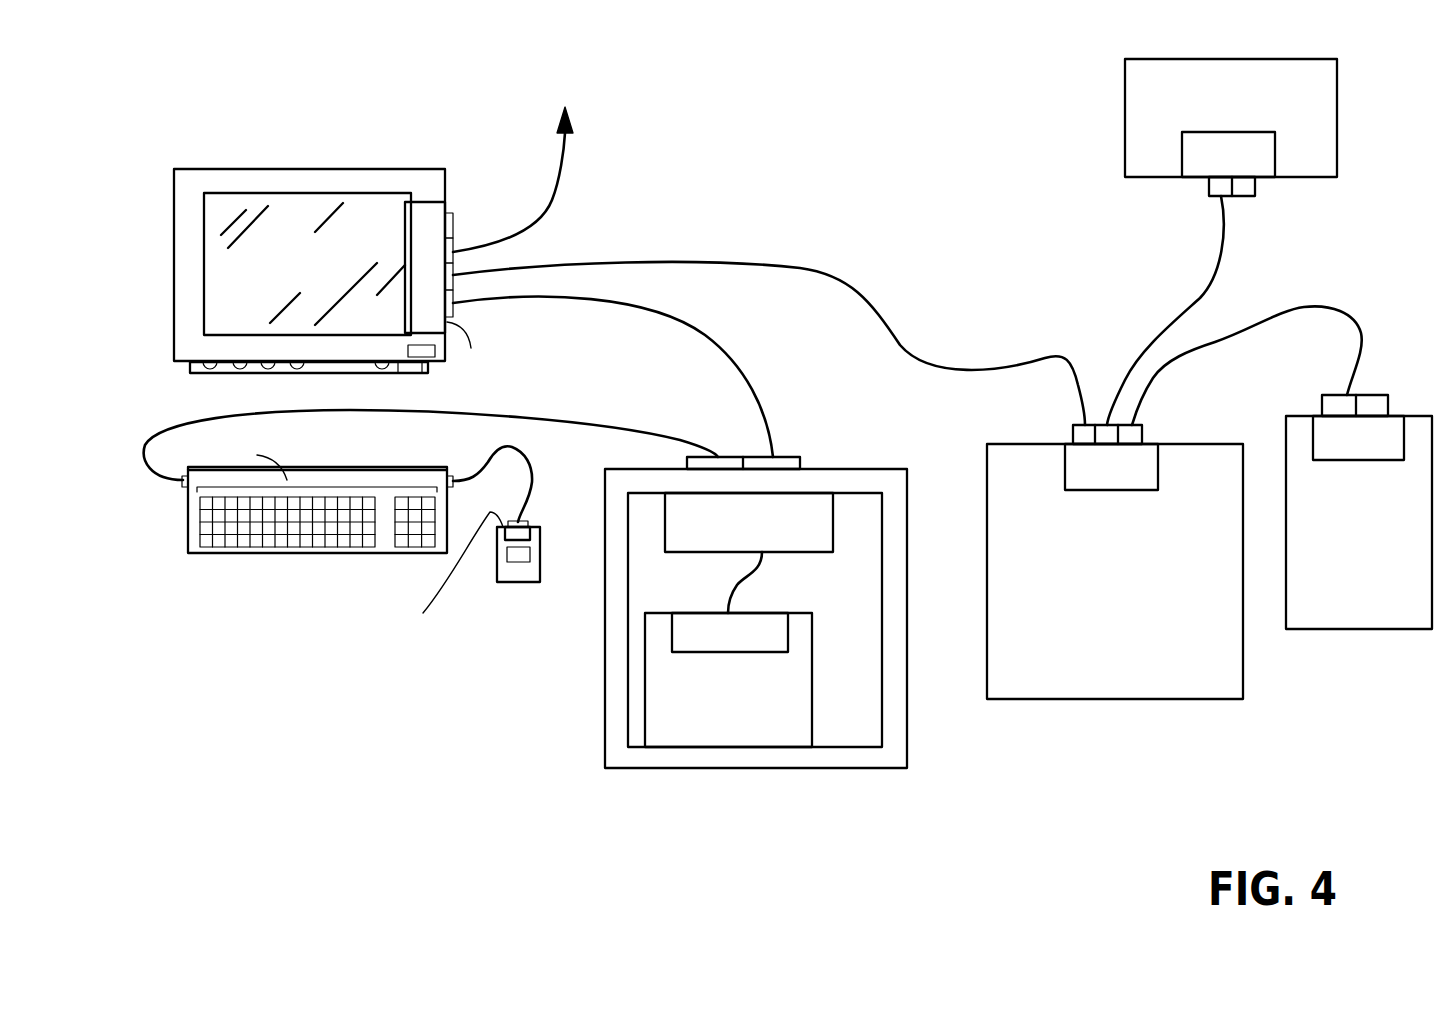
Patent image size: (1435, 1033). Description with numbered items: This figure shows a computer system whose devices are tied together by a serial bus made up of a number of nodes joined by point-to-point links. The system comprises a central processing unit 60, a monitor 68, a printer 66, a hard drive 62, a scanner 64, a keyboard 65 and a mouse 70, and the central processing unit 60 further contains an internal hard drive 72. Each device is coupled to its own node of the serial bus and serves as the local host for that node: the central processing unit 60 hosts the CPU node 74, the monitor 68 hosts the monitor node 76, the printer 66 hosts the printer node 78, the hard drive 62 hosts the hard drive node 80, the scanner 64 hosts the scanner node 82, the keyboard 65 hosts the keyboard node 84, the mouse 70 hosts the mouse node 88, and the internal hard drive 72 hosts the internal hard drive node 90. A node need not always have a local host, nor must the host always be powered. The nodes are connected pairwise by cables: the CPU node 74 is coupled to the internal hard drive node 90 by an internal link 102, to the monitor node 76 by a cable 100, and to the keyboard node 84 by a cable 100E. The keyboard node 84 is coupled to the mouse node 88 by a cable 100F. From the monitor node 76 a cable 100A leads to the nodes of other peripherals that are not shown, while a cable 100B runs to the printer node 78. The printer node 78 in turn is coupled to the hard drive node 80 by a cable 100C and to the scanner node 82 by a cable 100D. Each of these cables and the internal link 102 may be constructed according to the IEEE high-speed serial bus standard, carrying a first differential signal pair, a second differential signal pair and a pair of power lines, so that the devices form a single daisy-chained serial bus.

The central processing unit 60 is at (907, 755).
The hard drive 62 is at (1337, 100).
The scanner 64 is at (1365, 629).
The keyboard 65 is at (208, 553).
The printer 66 is at (1131, 699).
The monitor 68 is at (173, 212).
The mouse 70 is at (533, 575).
The internal hard drive 72 is at (807, 713).
The CPU node 74 is at (827, 540).
The monitor node 76 is at (443, 208).
The printer node 78 is at (1073, 444).
The hard drive node 80 is at (1262, 168).
The scanner node 82 is at (1318, 416).
The keyboard node 84 is at (347, 472).
The mouse node 88 is at (528, 530).
The internal hard drive node 90 is at (780, 627).
The cable 100 is at (707, 340).
The cable 100A is at (558, 193).
The cable 100B is at (787, 290).
The cable 100C is at (1207, 273).
The cable 100D is at (1273, 310).
The cable 100E is at (565, 415).
The cable 100F is at (535, 470).
The internal link 102 is at (727, 600).